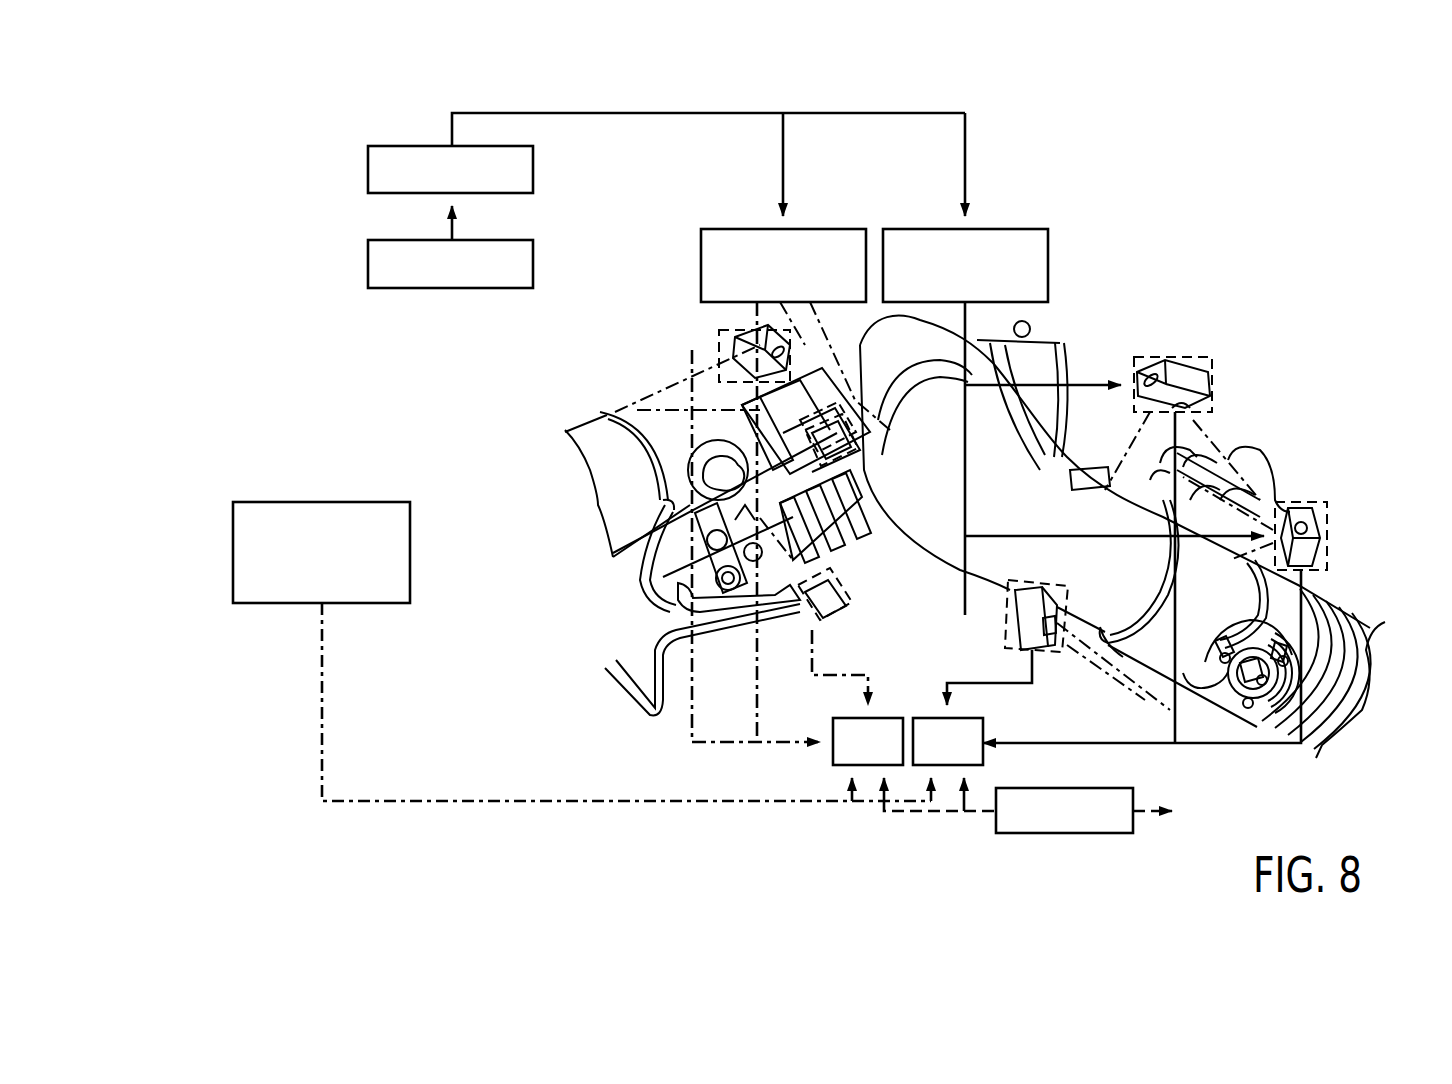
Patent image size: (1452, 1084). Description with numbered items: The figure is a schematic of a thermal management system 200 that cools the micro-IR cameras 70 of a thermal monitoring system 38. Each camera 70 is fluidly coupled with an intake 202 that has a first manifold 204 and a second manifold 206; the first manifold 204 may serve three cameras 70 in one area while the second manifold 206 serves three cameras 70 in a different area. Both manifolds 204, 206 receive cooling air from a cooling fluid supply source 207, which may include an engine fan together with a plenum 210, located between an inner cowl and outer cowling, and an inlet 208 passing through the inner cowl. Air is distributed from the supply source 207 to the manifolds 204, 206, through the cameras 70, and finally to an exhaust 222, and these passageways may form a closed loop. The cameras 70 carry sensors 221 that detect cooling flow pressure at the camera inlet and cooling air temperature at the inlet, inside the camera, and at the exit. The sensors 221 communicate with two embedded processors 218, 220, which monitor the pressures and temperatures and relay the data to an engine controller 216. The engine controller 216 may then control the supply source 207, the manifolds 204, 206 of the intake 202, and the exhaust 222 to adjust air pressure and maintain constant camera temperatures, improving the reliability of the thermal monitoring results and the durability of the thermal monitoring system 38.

The thermal monitoring system 38 is at (1205, 353).
The micro-IR cameras 70 is at (738, 330).
The thermal management system 200 is at (318, 320).
The intake 202 is at (1058, 217).
The first manifold 204 is at (822, 229).
The second manifold 206 is at (1004, 229).
The cooling fluid supply source 207 is at (358, 133).
The inlet 208 is at (368, 170).
The plenum 210 is at (368, 264).
The engine controller 216 is at (233, 551).
The embedded processor 218 is at (833, 755).
The embedded processor 220 is at (983, 755).
The sensors 221 is at (722, 345).
The exhaust 222 is at (1100, 788).